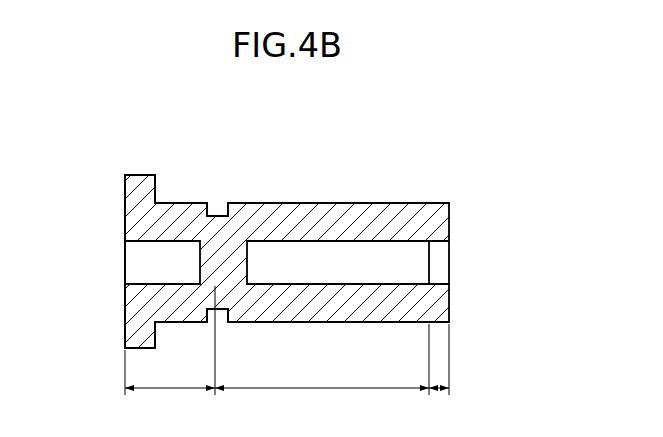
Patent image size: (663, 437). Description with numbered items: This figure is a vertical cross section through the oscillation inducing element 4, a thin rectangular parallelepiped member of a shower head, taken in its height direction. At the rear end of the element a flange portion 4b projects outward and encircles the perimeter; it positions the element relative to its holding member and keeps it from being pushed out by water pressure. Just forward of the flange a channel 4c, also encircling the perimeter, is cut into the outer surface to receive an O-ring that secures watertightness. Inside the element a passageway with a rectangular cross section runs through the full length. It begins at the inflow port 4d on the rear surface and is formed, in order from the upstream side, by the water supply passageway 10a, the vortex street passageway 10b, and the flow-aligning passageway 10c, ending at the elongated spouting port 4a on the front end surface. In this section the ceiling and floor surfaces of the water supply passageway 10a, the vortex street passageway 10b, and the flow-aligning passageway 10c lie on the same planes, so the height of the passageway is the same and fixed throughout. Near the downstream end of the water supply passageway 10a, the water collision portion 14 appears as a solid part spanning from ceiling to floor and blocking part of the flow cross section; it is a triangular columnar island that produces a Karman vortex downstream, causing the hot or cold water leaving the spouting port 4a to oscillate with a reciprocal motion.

The oscillation inducing element 4 is at (464, 178).
The spouting port 4a is at (443, 270).
The flange portion 4b is at (142, 175).
The channel 4c is at (217, 203).
The inflow port 4d is at (131, 243).
The water collision portion 14 is at (218, 262).
The water supply passageway 10a is at (170, 390).
The vortex street passageway 10b is at (323, 390).
The flow-aligning passageway 10c is at (440, 393).